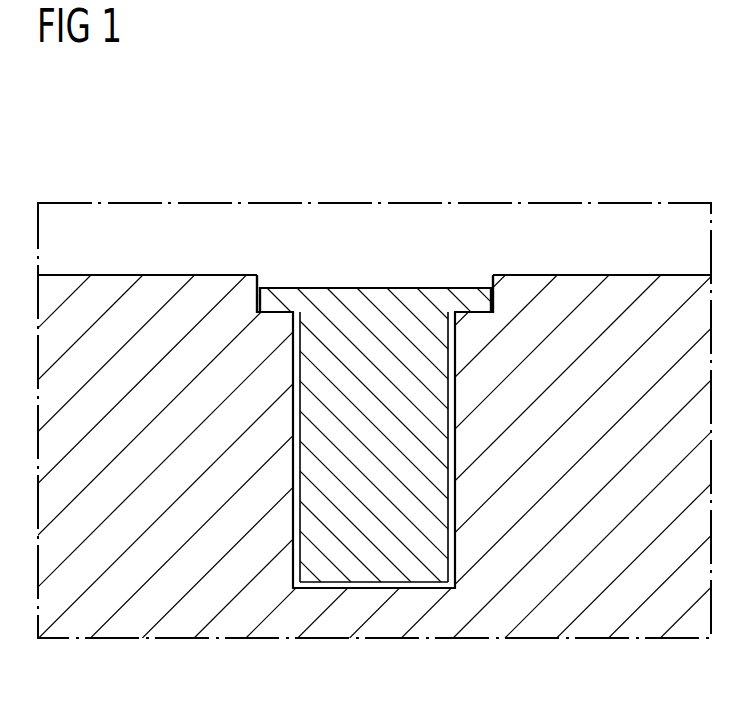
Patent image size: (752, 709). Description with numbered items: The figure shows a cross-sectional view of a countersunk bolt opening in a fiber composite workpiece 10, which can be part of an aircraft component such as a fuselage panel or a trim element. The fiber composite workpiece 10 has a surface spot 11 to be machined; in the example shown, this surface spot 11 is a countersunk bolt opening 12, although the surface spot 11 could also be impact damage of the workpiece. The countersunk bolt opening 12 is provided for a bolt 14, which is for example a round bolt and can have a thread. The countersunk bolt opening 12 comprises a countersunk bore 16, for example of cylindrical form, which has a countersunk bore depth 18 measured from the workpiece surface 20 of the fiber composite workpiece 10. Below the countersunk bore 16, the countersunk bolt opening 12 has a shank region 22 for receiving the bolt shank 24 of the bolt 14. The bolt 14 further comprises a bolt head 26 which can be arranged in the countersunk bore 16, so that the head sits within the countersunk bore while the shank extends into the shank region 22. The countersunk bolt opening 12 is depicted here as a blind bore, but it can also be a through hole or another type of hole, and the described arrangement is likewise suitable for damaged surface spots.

The fiber composite workpiece 10 is at (190, 119).
The surface spot 11 is at (300, 166).
The countersunk bolt opening 12 is at (294, 609).
The bolt 14 is at (405, 296).
The countersunk bore 16 is at (496, 291).
The countersunk bore depth 18 is at (256, 298).
The workpiece surface 20 is at (623, 266).
The shank region 22 is at (293, 420).
The bolt shank 24 is at (402, 579).
The bolt head 26 is at (284, 302).